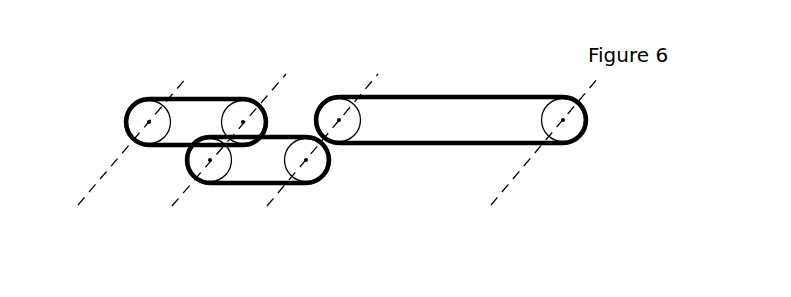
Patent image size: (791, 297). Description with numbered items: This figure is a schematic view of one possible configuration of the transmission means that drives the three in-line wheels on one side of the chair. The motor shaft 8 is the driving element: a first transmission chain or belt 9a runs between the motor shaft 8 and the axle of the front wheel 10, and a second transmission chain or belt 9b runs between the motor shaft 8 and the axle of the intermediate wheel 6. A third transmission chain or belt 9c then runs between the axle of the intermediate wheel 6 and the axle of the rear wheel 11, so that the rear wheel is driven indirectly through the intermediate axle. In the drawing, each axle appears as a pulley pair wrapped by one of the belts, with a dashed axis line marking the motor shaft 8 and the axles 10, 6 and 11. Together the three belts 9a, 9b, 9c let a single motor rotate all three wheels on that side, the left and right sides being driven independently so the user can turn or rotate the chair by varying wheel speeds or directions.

The transmission chain or belt 9a is at (203, 98).
The transmission chain or belt 9b is at (282, 134).
The transmission chain or belt 9c is at (463, 96).
The axle of the front wheel 10 is at (94, 185).
The motor shaft 8 is at (175, 202).
The axle of the intermediate wheel 6 is at (268, 202).
The axle of the rear wheel 11 is at (491, 202).